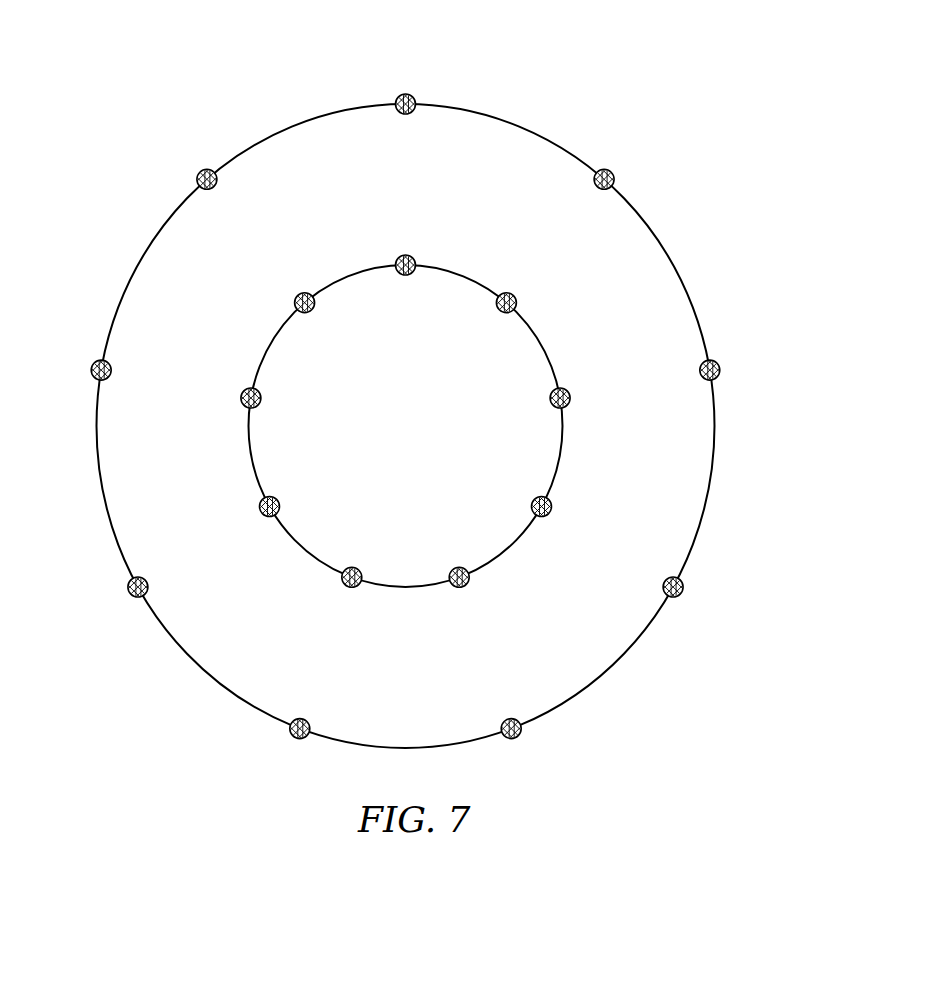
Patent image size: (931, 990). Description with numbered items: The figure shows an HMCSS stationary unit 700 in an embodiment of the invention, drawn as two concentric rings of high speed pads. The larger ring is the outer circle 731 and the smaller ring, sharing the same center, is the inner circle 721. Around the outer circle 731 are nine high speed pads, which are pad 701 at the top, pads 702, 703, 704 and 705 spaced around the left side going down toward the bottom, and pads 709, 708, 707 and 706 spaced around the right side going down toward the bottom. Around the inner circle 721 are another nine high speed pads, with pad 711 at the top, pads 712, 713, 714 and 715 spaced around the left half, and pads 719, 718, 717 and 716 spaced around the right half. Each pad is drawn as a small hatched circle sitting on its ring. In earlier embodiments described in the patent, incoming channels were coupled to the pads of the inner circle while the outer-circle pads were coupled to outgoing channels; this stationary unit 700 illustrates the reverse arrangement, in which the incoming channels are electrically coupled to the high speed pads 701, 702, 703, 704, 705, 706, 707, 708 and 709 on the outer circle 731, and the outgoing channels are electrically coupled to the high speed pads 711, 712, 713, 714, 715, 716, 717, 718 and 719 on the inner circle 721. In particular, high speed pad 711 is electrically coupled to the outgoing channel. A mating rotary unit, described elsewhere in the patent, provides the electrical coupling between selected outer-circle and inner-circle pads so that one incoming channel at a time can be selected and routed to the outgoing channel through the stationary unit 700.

The stationary unit 700 is at (598, 93).
The outer circle 731 is at (512, 124).
The inner circle 721 is at (532, 333).
The high speed pad 701 is at (413, 96).
The high speed pad 702 is at (216, 183).
The high speed pad 703 is at (95, 362).
The high speed pad 704 is at (129, 584).
The high speed pad 705 is at (292, 733).
The high speed pad 706 is at (505, 722).
The high speed pad 707 is at (667, 592).
The high speed pad 708 is at (719, 375).
The high speed pad 709 is at (614, 184).
The high speed pad 711 is at (412, 259).
The high speed pad 712 is at (295, 302).
The high speed pad 713 is at (246, 392).
The high speed pad 714 is at (262, 509).
The high speed pad 715 is at (342, 580).
The high speed pad 716 is at (470, 577).
The high speed pad 717 is at (550, 503).
The high speed pad 718 is at (569, 404).
The high speed pad 719 is at (516, 303).